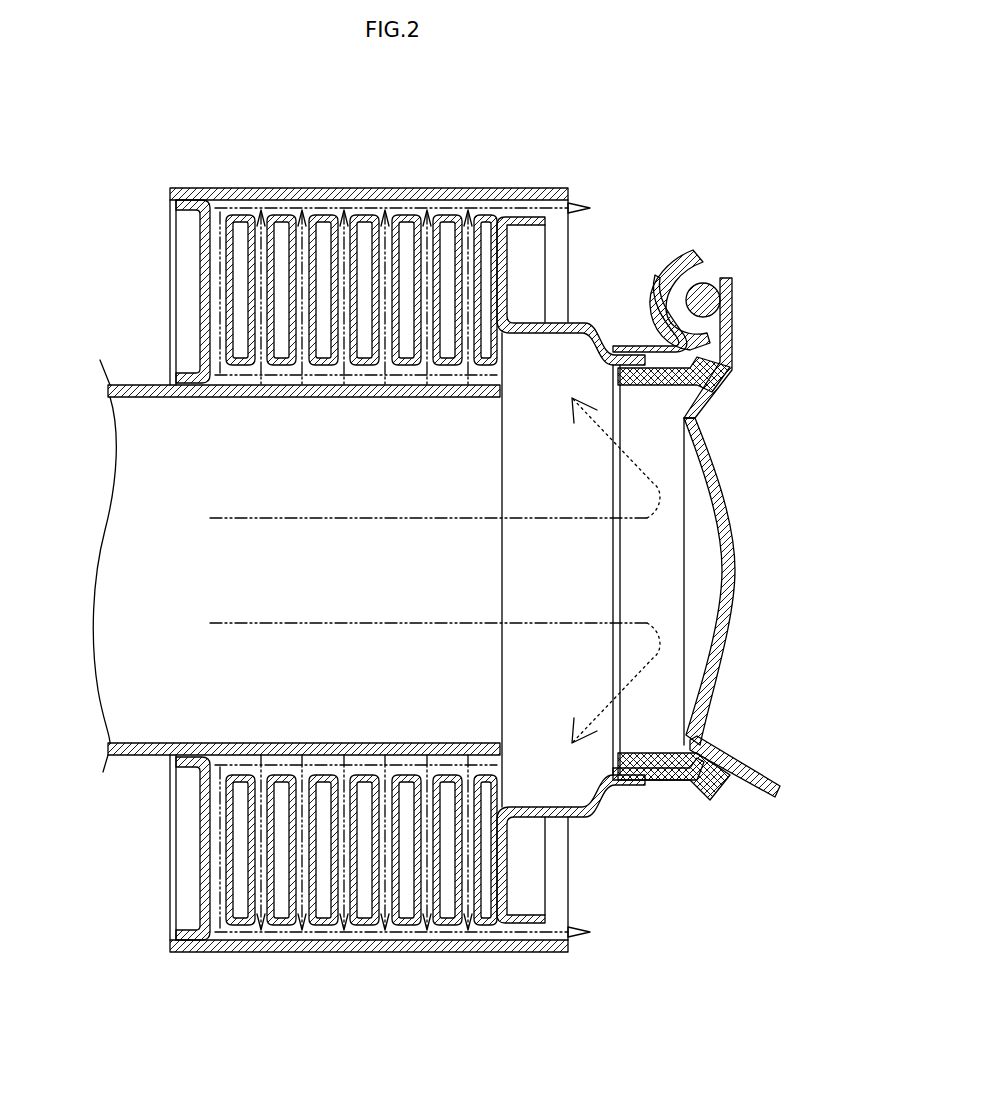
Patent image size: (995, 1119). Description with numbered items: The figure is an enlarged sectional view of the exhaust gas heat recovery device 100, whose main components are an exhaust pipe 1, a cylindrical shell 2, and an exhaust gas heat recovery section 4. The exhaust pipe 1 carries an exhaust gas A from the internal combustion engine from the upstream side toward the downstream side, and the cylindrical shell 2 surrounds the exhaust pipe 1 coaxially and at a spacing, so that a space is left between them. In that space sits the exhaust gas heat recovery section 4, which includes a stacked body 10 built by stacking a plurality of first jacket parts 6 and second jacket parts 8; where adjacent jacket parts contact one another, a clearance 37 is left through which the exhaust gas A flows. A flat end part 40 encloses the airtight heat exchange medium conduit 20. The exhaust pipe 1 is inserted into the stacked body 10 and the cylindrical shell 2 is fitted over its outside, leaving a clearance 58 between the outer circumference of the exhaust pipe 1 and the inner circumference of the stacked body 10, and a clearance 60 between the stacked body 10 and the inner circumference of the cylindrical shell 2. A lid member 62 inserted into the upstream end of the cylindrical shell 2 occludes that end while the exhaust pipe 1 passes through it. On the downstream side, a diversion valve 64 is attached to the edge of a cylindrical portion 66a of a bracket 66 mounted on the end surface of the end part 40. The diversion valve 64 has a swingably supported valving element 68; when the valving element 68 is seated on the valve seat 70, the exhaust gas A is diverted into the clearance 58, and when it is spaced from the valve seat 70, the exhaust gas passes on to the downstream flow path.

The exhaust gas heat recovery device 100 is at (642, 123).
The exhaust pipe 1 is at (140, 385).
The cylindrical shell 2 is at (490, 188).
The exhaust gas heat recovery section 4 is at (454, 168).
The first jacket part 6 is at (243, 925).
The second jacket part 8 is at (283, 925).
The stacked body 10 is at (420, 966).
The heat exchange medium conduit 20 is at (398, 930).
The clearance 37 is at (300, 263).
The end part 40 is at (492, 928).
The clearance 58 is at (568, 430).
The clearance 60 is at (325, 212).
The lid member 62 is at (212, 873).
The diversion valve 64 is at (739, 814).
The bracket 66 is at (508, 280).
The cylindrical portion 66a is at (628, 780).
The valving element 68 is at (733, 566).
The valve seat 70 is at (723, 747).
The exhaust gas A is at (272, 624).